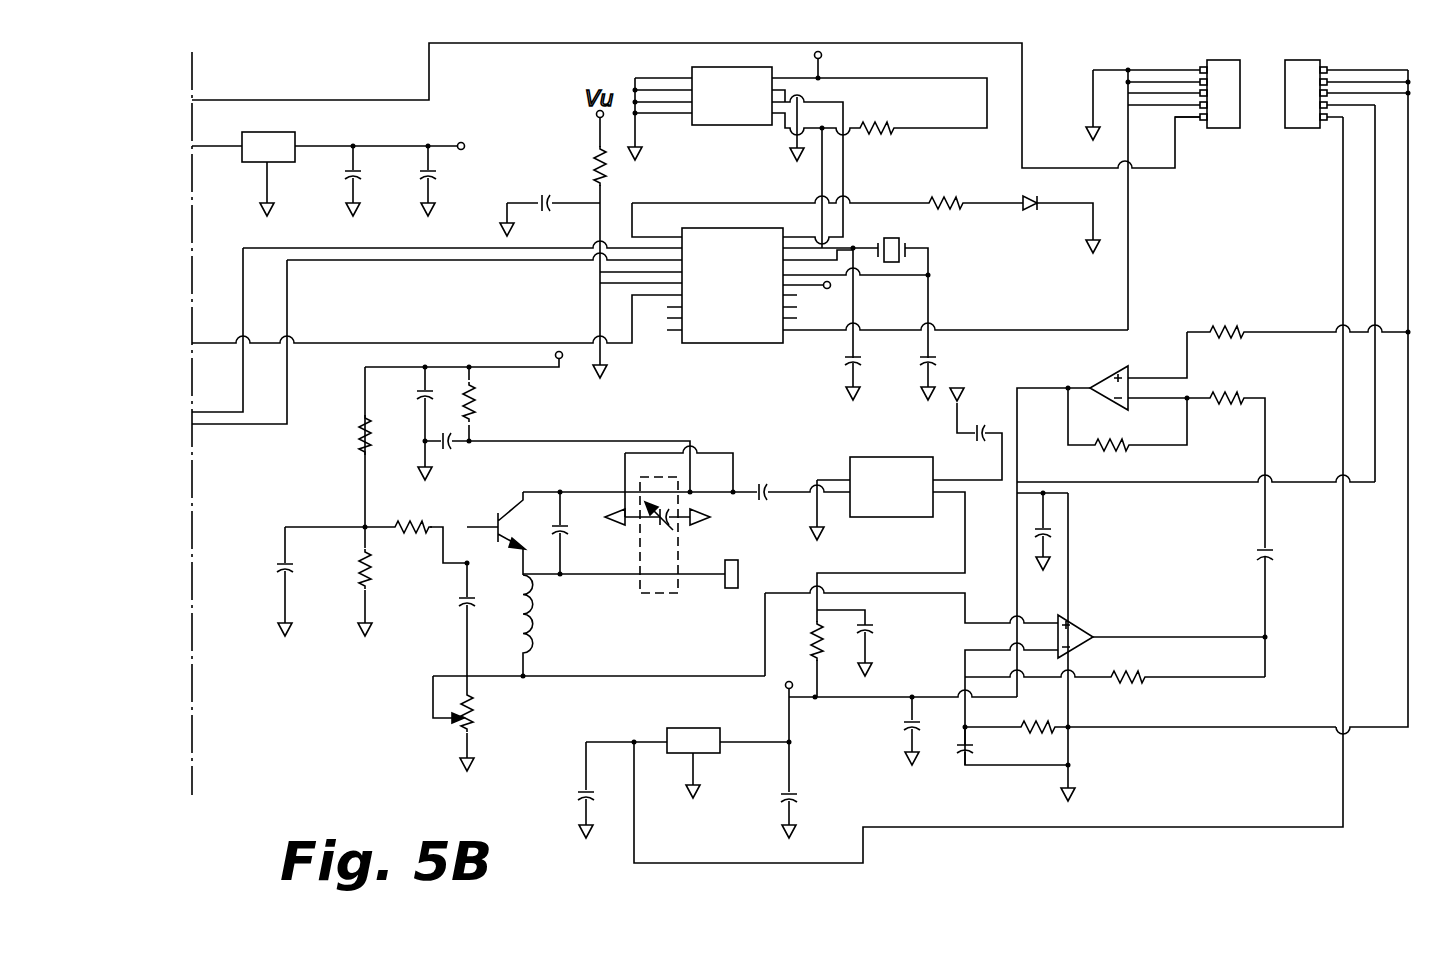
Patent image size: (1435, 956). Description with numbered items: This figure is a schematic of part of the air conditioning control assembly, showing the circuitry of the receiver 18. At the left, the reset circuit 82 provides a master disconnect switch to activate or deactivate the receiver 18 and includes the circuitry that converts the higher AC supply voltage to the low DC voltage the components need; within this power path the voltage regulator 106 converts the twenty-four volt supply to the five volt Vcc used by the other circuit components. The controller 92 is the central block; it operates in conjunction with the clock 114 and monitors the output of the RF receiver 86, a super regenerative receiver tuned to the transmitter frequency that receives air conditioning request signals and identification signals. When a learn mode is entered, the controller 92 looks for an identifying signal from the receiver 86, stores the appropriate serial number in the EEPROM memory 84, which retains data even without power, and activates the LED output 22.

The reset circuit 82 is at (318, 78).
The receiver 18 is at (388, 78).
The voltage regulator 106 is at (298, 143).
The EEPROM memory 84 is at (745, 126).
The LED output 22 is at (1035, 212).
The clock 114 is at (952, 283).
The controller 92 is at (717, 343).
The receiver 86 is at (396, 691).